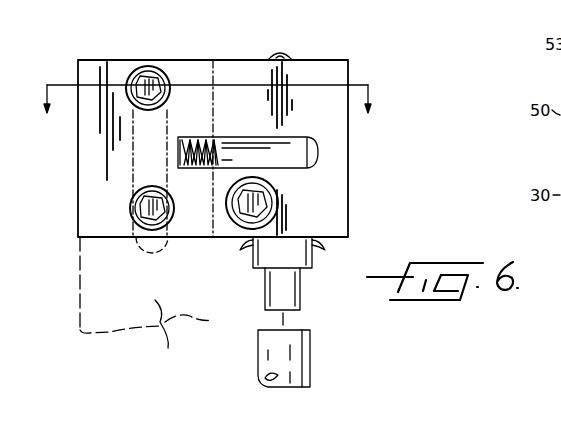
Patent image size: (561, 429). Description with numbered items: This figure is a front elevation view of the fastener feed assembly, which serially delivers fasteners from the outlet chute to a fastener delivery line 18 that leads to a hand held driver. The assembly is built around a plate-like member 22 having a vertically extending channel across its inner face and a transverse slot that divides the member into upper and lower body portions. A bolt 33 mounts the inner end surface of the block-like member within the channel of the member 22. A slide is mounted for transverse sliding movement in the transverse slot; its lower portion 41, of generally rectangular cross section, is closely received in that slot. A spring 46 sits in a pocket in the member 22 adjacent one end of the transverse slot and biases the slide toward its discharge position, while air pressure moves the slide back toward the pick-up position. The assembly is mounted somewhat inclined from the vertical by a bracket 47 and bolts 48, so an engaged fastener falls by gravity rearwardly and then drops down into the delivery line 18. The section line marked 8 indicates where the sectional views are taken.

The section line 8- 8 is at (213, 114).
The fastener delivery line 18 is at (312, 346).
The plate-like member 22 is at (163, 53).
The bolt 33 is at (264, 218).
The lower portion 41 is at (301, 160).
The spring 46 is at (188, 170).
The bracket 47 is at (172, 334).
The bolts 48 is at (137, 106).